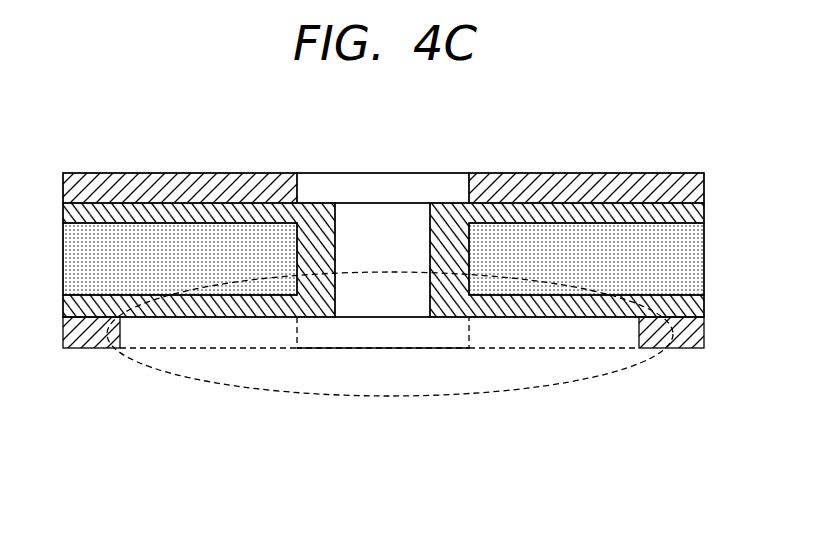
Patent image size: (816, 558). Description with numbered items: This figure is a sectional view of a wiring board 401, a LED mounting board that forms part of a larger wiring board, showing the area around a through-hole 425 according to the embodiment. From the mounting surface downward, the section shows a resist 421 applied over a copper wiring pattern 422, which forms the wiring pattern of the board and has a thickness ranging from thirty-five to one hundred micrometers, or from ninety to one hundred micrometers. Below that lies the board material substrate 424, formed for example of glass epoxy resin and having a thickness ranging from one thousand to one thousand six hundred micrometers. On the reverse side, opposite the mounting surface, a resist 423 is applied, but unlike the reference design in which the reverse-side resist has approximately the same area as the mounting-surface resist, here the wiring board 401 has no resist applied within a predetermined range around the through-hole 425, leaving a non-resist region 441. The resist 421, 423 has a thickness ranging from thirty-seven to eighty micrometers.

The wiring board 401 is at (692, 108).
The resist 421 is at (123, 180).
The copper wiring pattern 422 is at (217, 218).
The resist 423 is at (83, 330).
The board material substrate 424 is at (213, 265).
The through-hole 425 is at (385, 218).
The non-resist region 441 is at (387, 335).